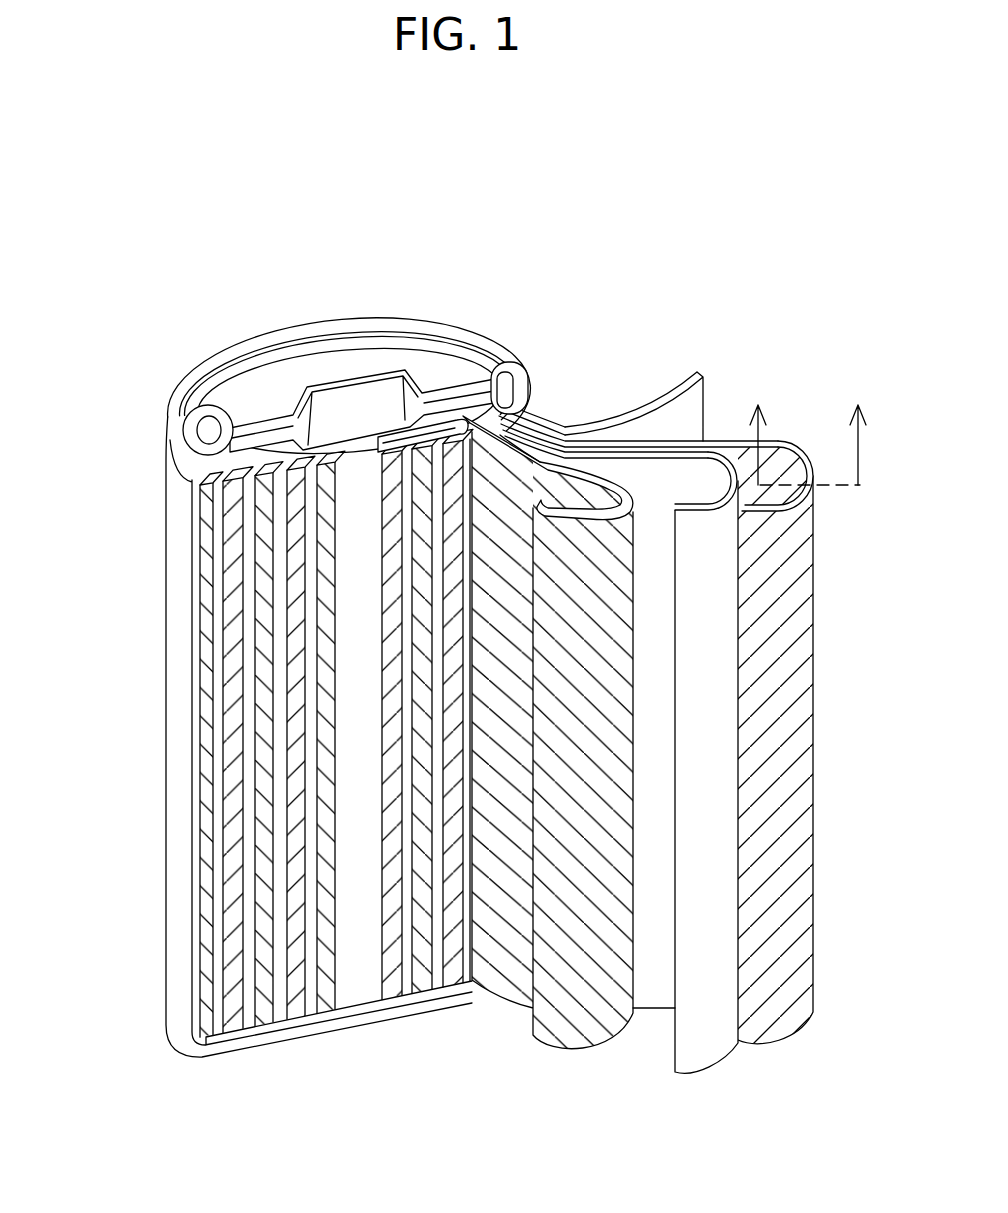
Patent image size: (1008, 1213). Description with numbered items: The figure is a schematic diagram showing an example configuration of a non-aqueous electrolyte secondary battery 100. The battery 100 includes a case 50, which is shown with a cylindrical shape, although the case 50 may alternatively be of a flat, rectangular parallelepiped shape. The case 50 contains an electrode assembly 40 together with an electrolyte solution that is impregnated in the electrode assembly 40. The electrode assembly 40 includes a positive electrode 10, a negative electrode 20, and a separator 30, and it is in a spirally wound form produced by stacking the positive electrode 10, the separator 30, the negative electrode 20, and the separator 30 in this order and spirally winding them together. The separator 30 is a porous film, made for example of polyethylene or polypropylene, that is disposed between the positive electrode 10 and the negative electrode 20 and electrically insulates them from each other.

The battery 100 is at (105, 205).
The positive electrode 10 is at (553, 468).
The negative electrode 20 is at (793, 450).
The separator 30 is at (622, 460).
The electrode assembly 40 is at (537, 318).
The case 50 is at (168, 636).